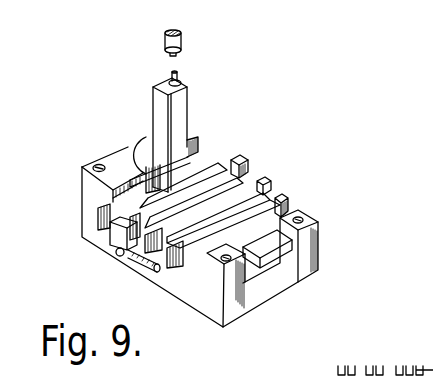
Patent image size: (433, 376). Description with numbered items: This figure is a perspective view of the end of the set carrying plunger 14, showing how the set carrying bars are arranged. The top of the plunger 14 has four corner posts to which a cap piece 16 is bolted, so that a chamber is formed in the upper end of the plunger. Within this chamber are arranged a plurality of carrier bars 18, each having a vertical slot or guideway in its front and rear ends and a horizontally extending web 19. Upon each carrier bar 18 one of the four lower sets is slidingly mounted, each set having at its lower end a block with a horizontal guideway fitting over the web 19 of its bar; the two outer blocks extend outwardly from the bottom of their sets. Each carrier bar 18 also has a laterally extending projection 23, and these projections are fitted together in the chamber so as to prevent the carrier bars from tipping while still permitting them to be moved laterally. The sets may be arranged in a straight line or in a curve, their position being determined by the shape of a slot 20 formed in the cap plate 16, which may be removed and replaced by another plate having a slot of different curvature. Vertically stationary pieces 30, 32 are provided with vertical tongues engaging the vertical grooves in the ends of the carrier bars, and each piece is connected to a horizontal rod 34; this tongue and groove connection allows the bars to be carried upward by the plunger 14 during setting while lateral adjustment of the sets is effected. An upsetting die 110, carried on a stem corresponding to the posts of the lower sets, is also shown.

The reciprocatory plunger 14 is at (285, 278).
The cap piece 16 is at (113, 155).
The carrier bar 18 is at (255, 197).
The horizontally extending web 19 is at (227, 202).
The slot 20 is at (148, 160).
The laterally extending projection 23 is at (292, 252).
The vertically stationary piece 30 is at (110, 236).
The vertically stationary piece 32 is at (232, 160).
The horizontal rod 34 is at (143, 260).
The upsetting die 110 is at (184, 40).